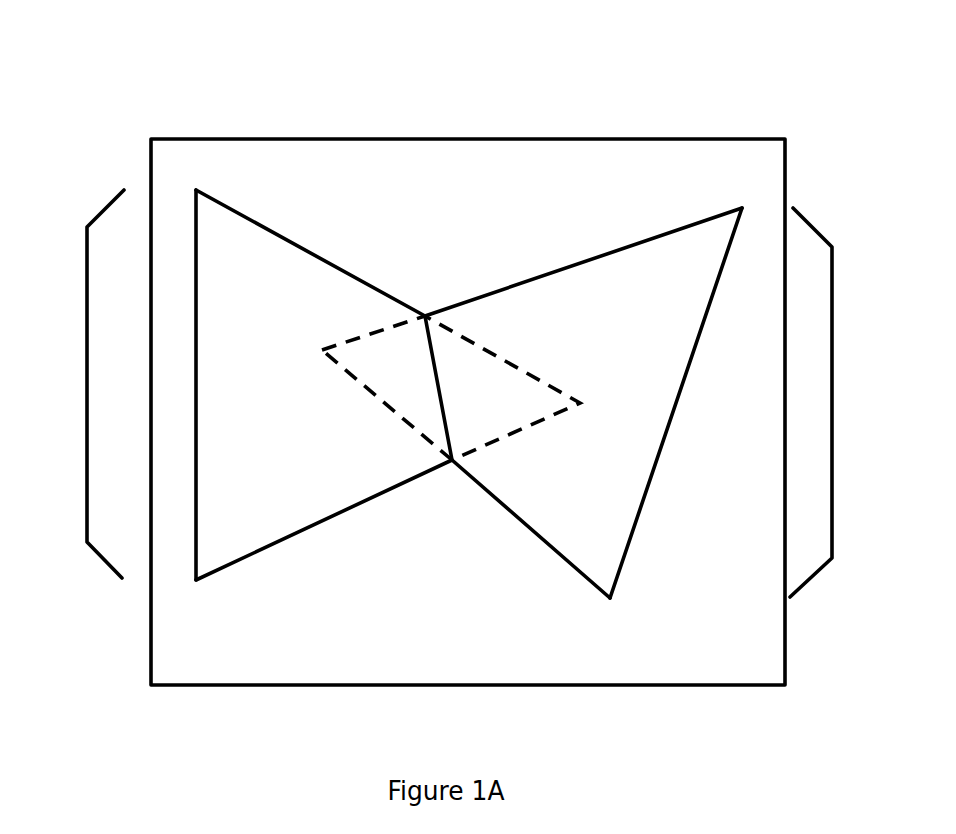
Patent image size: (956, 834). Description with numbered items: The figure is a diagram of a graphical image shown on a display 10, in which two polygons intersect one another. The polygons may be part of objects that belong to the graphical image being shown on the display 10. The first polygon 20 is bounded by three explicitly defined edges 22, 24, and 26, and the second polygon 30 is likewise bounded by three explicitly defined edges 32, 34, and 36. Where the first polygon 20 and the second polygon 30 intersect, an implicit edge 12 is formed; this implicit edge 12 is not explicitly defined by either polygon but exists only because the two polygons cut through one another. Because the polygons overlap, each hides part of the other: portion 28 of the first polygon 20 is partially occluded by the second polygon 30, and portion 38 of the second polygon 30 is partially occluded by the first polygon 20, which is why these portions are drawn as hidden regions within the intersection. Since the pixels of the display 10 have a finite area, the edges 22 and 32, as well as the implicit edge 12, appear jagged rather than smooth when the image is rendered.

The display 10 is at (435, 35).
The implicit edge 12 is at (465, 411).
The first polygon 20 is at (87, 383).
The edge 22 is at (232, 208).
The edge 24 is at (195, 543).
The edge 26 is at (220, 568).
The portion 28 is at (451, 404).
The second polygon 30 is at (832, 402).
The edge 32 is at (657, 237).
The edge 34 is at (623, 562).
The edge 36 is at (565, 560).
The portion 38 is at (395, 412).